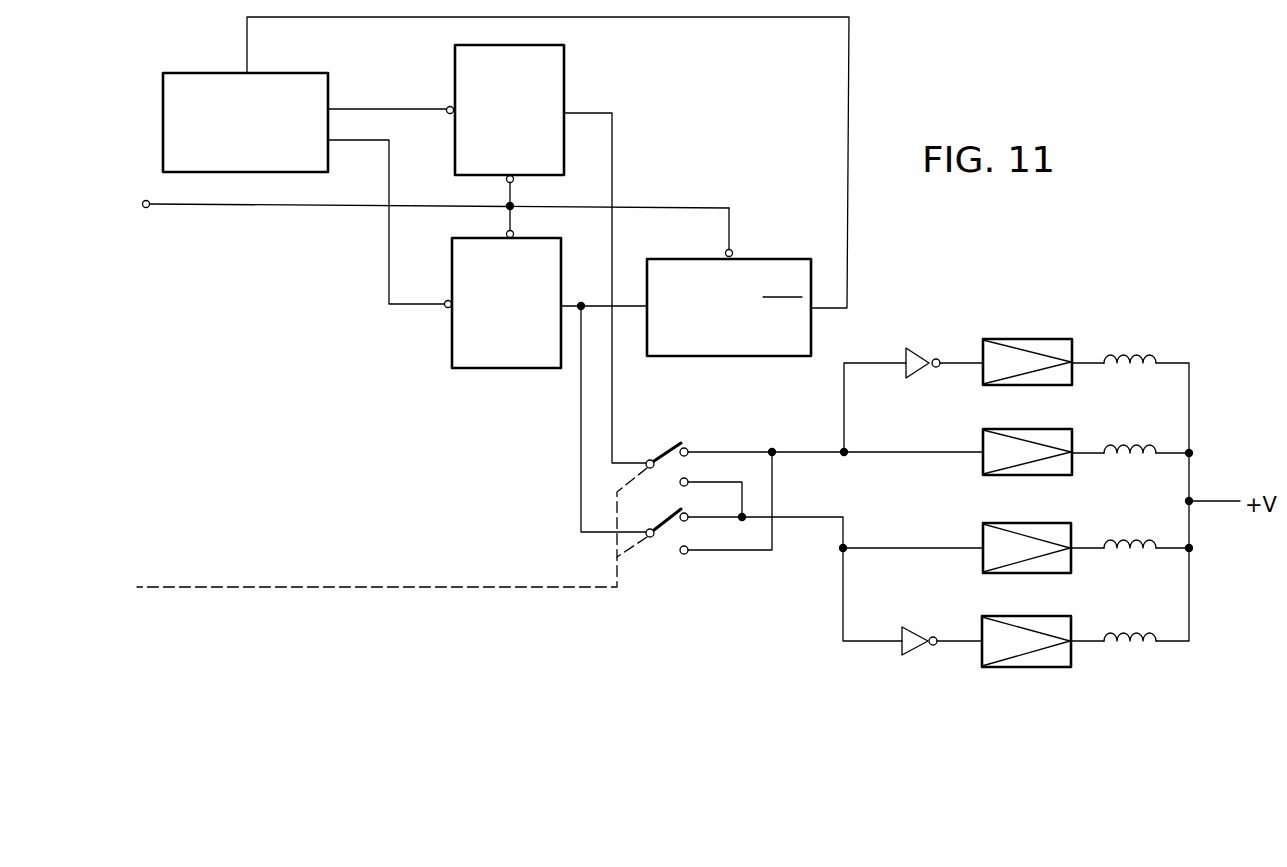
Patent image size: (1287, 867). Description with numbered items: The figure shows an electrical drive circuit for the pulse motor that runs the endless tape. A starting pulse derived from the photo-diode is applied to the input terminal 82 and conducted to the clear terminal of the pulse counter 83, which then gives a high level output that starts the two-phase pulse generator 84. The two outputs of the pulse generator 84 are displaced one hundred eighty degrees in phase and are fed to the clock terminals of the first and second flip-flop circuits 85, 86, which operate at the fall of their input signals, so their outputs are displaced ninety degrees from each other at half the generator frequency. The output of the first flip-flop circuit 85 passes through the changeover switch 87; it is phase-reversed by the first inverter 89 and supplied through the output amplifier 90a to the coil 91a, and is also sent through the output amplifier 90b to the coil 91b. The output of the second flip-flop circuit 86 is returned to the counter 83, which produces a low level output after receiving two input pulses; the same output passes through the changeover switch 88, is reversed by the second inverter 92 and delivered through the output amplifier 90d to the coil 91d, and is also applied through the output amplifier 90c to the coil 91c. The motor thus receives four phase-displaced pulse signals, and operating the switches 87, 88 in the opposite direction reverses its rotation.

The input terminal 82 is at (185, 205).
The pulse counter 83 is at (718, 357).
The two-phase pulse generator 84 is at (278, 73).
The first flip-flop circuit 85 is at (564, 62).
The second flip-flop circuit 86 is at (498, 370).
The changeover switch 87 is at (659, 455).
The changeover switch 88 is at (658, 522).
The first inverter 89 is at (918, 373).
The output amplifier 90a is at (1022, 339).
The output amplifier 90b is at (1022, 429).
The output amplifier 90c is at (1022, 523).
The output amplifier 90d is at (1022, 616).
The coil 91a is at (1133, 353).
The coil 91b is at (1133, 444).
The coil 91c is at (1133, 538).
The coil 91d is at (1133, 631).
The second inverter 92 is at (916, 627).